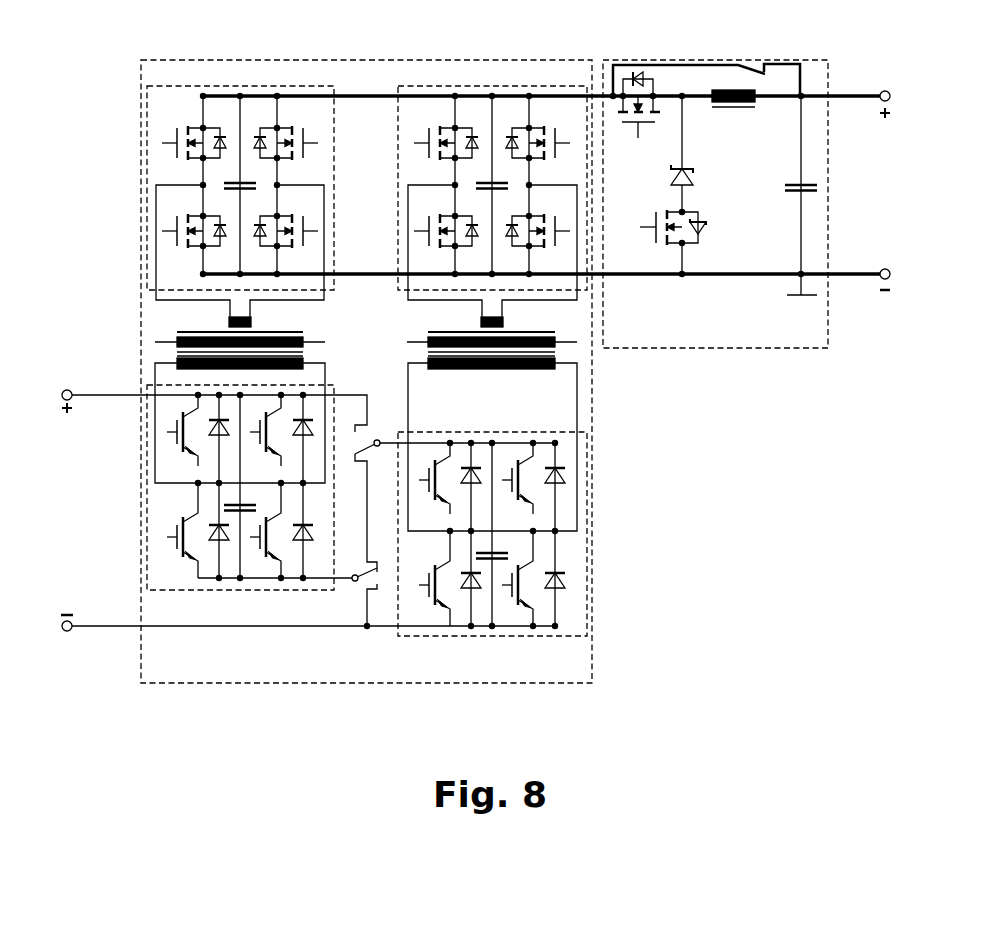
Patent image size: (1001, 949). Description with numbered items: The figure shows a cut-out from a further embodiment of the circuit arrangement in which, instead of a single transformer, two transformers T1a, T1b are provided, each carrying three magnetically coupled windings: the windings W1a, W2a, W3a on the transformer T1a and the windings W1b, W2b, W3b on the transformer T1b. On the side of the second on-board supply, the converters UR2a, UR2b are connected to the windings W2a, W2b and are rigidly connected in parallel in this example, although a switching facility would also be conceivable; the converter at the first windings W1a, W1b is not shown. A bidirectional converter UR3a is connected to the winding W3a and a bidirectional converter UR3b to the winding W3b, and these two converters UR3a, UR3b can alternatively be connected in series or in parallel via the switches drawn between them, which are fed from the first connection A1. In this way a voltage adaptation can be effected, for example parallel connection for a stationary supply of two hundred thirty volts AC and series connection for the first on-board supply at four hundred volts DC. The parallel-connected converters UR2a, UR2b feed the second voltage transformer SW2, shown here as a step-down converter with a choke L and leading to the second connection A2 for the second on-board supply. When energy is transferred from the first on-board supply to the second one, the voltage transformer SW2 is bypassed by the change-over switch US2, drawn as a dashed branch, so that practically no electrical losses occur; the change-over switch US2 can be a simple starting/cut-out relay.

The converter UR2a is at (183, 93).
The converter UR2b is at (472, 92).
The bidirectional converter UR3a is at (155, 558).
The bidirectional converter UR3b is at (573, 550).
The transformer T1a is at (312, 329).
The transformer T1b is at (410, 351).
The winding W1a is at (177, 336).
The winding W2a is at (229, 320).
The winding W3a is at (177, 359).
The winding W1b is at (557, 347).
The winding W2b is at (503, 319).
The winding W3b is at (555, 363).
The change-over switch US2 is at (747, 63).
The voltage transformer SW2 is at (813, 63).
The choke L is at (733, 118).
The first connection A1 is at (69, 510).
The second connection A2 is at (886, 190).